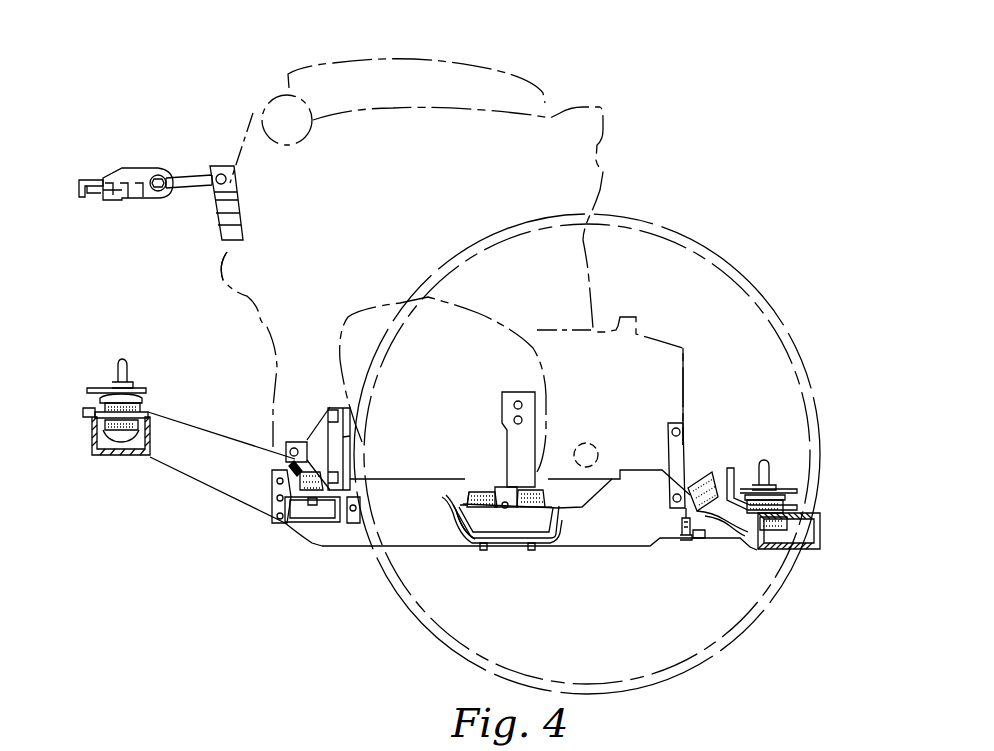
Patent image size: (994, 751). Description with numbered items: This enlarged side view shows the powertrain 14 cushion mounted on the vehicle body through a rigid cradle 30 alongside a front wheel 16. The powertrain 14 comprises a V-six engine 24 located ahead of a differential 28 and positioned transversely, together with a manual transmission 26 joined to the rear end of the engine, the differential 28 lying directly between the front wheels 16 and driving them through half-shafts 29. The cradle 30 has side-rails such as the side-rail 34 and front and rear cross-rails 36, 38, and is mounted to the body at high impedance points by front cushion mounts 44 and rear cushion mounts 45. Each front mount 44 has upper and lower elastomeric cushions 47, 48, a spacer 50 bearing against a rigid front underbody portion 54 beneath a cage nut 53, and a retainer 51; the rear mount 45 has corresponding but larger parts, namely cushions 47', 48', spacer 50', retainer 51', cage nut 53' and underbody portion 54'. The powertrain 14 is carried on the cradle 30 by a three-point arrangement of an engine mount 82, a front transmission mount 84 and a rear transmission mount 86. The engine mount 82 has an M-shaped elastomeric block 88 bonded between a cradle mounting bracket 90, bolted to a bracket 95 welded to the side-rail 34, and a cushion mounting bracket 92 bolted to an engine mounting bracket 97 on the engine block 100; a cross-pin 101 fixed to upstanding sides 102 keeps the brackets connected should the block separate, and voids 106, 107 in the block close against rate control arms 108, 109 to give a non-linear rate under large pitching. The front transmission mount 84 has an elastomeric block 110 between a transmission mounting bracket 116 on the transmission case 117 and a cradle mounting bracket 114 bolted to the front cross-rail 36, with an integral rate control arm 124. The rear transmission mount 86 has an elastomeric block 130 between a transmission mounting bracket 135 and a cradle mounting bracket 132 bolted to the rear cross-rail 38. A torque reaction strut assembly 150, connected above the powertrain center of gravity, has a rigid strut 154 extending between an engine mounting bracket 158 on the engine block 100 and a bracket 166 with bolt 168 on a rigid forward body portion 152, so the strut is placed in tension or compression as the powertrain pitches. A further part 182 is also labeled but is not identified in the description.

The powertrain 14 is at (432, 58).
The front wheel 16 is at (696, 240).
The V-six engine 24 is at (555, 103).
The manual transmission 26 is at (393, 303).
The differential 28 is at (681, 340).
The half-shaft 29 is at (600, 445).
The cradle 30 is at (288, 513).
The side-rail 34 is at (211, 472).
The front cross-rail 36 is at (323, 532).
The rear cross-rail 38 is at (700, 540).
The front cushion mount 44 is at (146, 381).
The rear cushion mount 45 is at (784, 470).
The upper elastomeric cushion 47 is at (161, 396).
The upper elastomeric cushion 47' is at (809, 497).
The lower elastomeric cushion 48 is at (169, 421).
The lower elastomeric cushion 48' is at (823, 532).
The spacer 50 is at (155, 380).
The spacer 50' is at (823, 475).
The retainer 51 is at (146, 438).
The retainer 51' is at (808, 547).
The cage nut 53 is at (129, 351).
The cage nut 53' is at (769, 445).
The front underbody portion 54 is at (104, 366).
The underbody portion 54' is at (799, 472).
The engine mount 82 is at (512, 547).
The front transmission mount 84 is at (306, 440).
The rear transmission mount 86 is at (718, 469).
The elastomeric block 88 is at (533, 505).
The cradle mounting bracket 90 is at (560, 528).
The cushion mounting bracket 92 is at (486, 492).
The bracket 95 is at (460, 517).
The engine mounting bracket 97 is at (522, 432).
The engine block 100 is at (227, 252).
The cross-pin 101 is at (507, 502).
The upstanding sides 102 is at (475, 547).
The void 106 is at (466, 500).
The void 107 is at (545, 509).
The rate control arm 108 is at (450, 512).
The rate control arm 109 is at (565, 518).
The elastomeric block 110 is at (314, 523).
The cradle mounting bracket 114 is at (273, 508).
The transmission mounting bracket 116 is at (330, 407).
The transmission case 117 is at (343, 437).
The rate control arm 124 is at (292, 468).
The elastomeric block 130 is at (723, 526).
The cradle mounting bracket 132 is at (683, 537).
The transmission mounting bracket 135 is at (697, 456).
The torque reaction strut assembly 150 is at (183, 158).
The forward body portion 152 is at (92, 182).
The strut 154 is at (190, 188).
The engine mounting bracket 158 is at (240, 210).
The bracket 166 is at (143, 170).
The bolt 168 is at (161, 175).
The pivot pin 182 is at (222, 172).